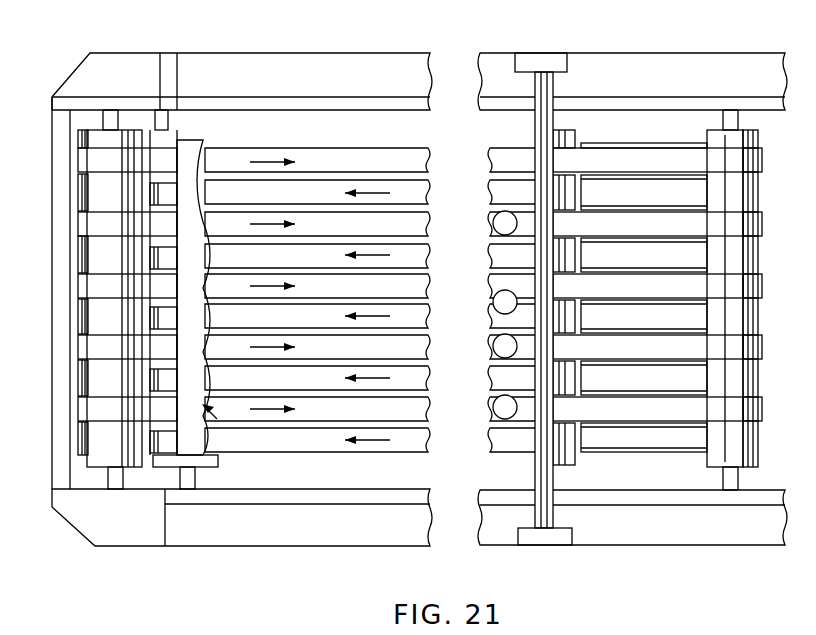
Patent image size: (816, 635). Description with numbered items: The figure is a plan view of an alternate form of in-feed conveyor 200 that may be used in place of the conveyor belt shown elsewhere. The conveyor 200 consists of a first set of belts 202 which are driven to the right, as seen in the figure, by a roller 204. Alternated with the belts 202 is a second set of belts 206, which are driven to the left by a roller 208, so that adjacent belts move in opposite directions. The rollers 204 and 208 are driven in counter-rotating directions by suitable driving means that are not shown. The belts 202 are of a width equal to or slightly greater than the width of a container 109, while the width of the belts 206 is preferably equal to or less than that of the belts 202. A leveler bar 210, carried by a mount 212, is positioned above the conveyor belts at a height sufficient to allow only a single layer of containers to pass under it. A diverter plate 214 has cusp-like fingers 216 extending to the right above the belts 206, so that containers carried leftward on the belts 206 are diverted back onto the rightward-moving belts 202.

The conveyor 200 is at (282, 141).
The first set of belts 202 is at (320, 166).
The roller 204 is at (164, 138).
The second set of belts 206 is at (395, 190).
The roller 208 is at (85, 138).
The leveler bar 210 is at (552, 124).
The mount 212 is at (556, 62).
The diverter plate 214 is at (231, 442).
The cusp-like fingers 216 is at (208, 320).
The container 109 is at (508, 414).